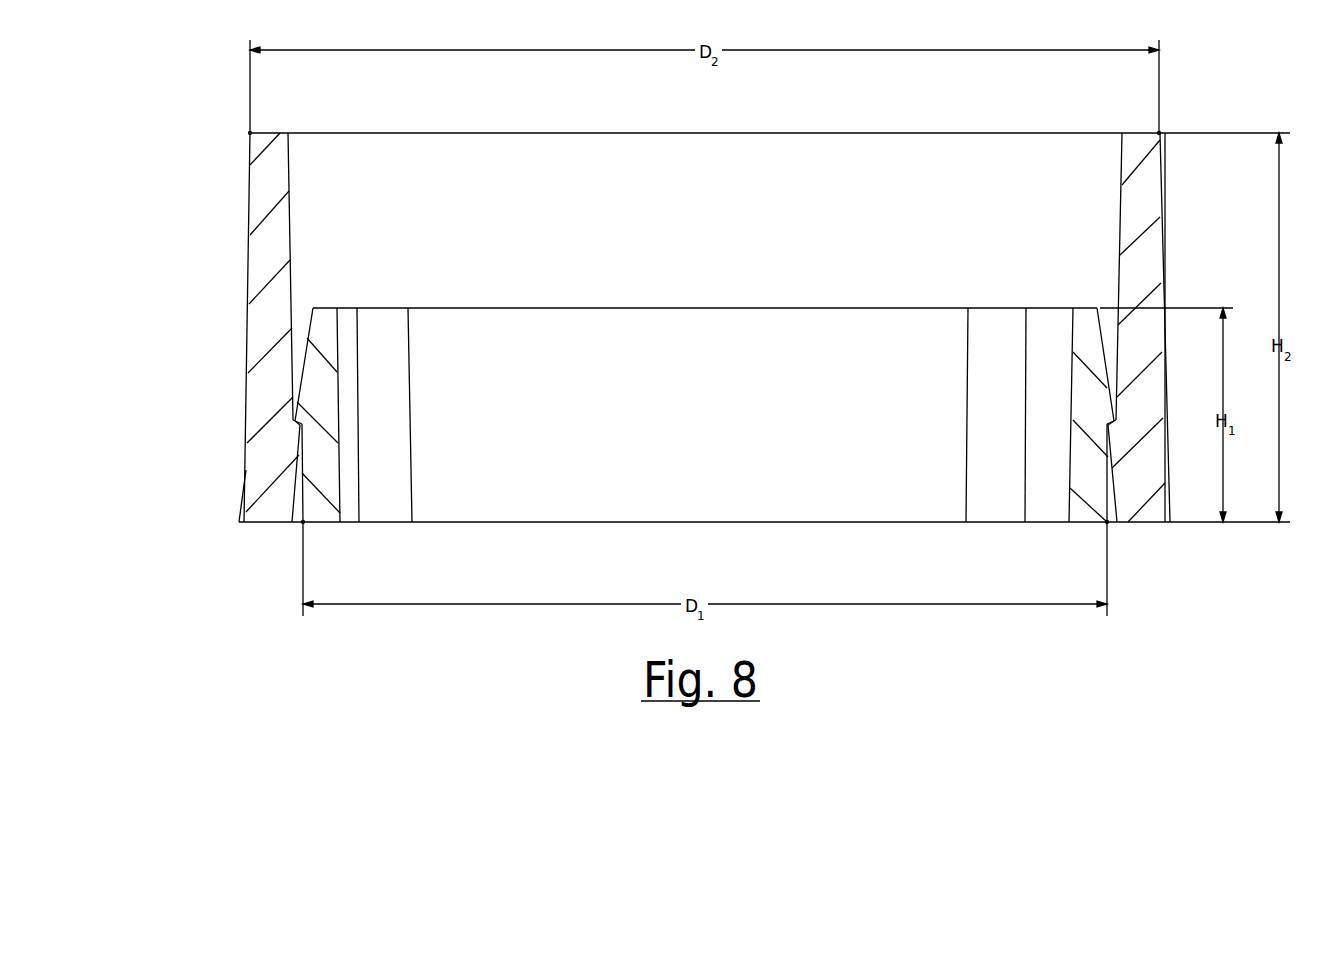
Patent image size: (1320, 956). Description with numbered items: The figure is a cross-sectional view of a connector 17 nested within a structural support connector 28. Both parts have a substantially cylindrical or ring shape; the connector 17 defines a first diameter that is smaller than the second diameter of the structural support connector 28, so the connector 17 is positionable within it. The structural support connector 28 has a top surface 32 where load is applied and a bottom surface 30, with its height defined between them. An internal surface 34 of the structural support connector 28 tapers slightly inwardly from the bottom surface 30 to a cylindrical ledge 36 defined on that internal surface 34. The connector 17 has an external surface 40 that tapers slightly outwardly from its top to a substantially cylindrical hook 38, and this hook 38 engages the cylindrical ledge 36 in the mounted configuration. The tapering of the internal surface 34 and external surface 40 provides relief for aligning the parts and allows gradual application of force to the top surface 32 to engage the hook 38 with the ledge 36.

The connector 17 is at (705, 443).
The structural support connector 28 is at (704, 306).
The bottom surface 30 is at (744, 565).
The top surface 32 is at (638, 112).
The internal surface 34 is at (705, 255).
The cylindrical ledge 36 is at (609, 473).
The cylindrical hook 38 is at (617, 401).
The external surface 40 is at (614, 403).